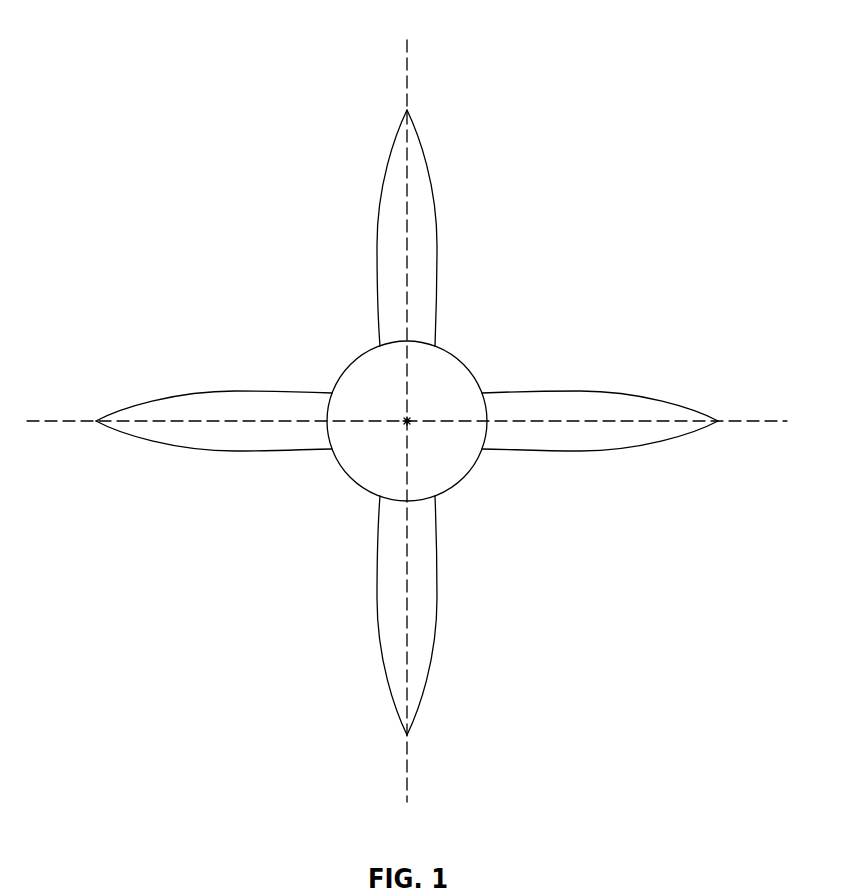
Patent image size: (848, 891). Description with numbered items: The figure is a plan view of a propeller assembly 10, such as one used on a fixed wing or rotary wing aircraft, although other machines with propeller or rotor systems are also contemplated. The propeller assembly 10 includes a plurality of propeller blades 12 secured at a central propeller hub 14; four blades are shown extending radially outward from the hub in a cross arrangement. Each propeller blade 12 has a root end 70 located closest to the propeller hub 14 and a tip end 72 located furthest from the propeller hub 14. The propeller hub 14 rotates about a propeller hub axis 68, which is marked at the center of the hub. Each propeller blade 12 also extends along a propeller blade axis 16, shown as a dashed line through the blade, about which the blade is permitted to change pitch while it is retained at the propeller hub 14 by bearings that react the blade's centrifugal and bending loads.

The propeller assembly 10 is at (155, 73).
The propeller blade 12 is at (438, 250).
The propeller hub 14 is at (458, 372).
The propeller blade axis 16 is at (405, 72).
The propeller hub axis 68 is at (410, 424).
The root end 70 is at (380, 346).
The tip end 72 is at (407, 110).